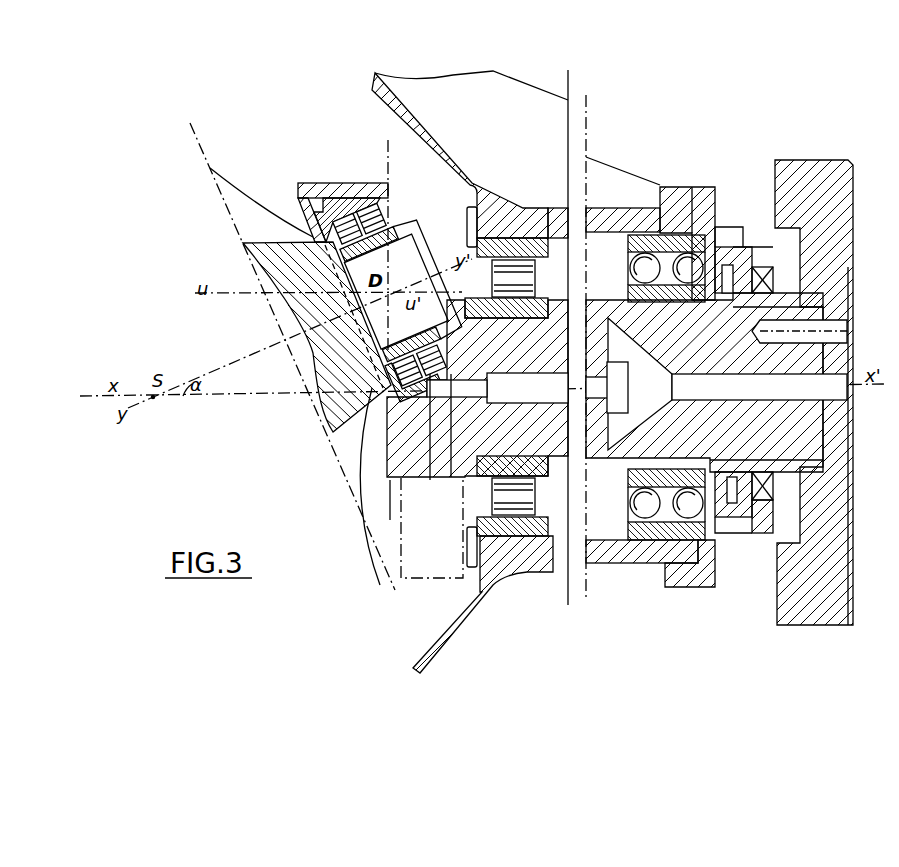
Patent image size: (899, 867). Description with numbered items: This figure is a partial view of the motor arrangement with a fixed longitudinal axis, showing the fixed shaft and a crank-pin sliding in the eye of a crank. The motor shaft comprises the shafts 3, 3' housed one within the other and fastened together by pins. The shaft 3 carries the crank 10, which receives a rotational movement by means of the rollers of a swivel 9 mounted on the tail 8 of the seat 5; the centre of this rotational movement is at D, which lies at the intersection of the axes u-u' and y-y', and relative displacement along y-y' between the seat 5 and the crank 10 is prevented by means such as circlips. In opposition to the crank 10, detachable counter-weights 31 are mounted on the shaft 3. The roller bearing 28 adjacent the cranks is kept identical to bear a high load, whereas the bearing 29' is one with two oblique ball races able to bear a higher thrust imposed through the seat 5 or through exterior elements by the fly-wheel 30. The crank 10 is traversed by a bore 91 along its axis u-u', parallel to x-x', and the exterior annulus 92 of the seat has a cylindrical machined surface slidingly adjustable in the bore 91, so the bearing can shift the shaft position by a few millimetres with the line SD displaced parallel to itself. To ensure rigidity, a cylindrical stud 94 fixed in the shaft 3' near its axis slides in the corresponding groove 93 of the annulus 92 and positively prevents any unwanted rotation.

The shaft 3 is at (682, 362).
The shaft 3' is at (599, 206).
The seat 5 is at (228, 229).
The tail 8 is at (406, 268).
The swivel 9 is at (394, 256).
The crank 10 is at (329, 180).
The roller bearing 28 is at (527, 530).
The bearing 29' is at (642, 578).
The fly-wheel 30 is at (845, 182).
The counter-weights 31 is at (424, 576).
The bore 91 is at (313, 196).
The annulus 92 is at (362, 186).
The groove 93 is at (451, 377).
The cylindrical stud 94 is at (431, 483).